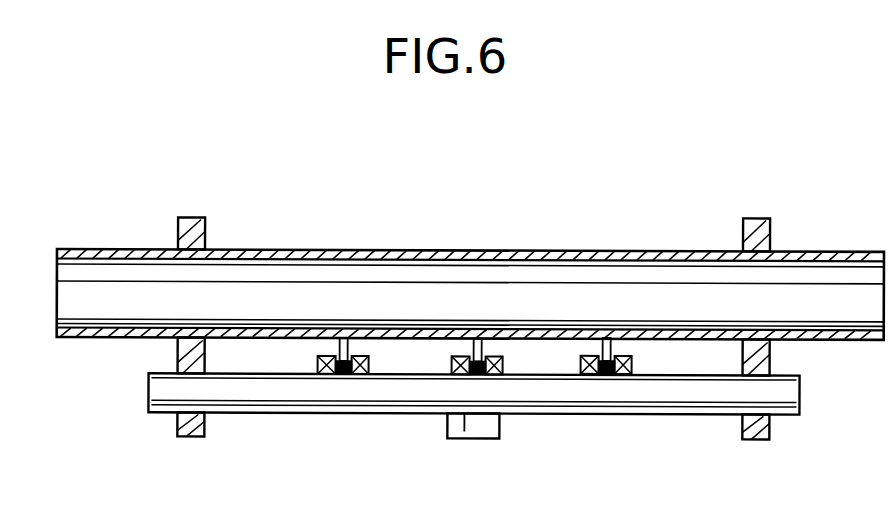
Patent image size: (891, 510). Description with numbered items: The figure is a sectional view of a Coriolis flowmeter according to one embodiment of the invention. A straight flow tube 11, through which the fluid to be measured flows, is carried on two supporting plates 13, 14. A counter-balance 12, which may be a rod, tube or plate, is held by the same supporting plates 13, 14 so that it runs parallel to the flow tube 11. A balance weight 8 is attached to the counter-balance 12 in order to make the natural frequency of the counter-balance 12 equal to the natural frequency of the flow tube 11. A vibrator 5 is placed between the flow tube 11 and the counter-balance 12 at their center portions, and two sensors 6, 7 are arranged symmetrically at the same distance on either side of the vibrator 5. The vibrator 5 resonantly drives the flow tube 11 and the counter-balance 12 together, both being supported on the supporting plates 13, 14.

The vibrator 5 is at (438, 361).
The sensor 6 is at (303, 361).
The sensor 7 is at (572, 360).
The balance weight 8 is at (477, 436).
The flow tube 11 is at (838, 269).
The counter-balance 12 is at (647, 404).
The supporting plate 13 is at (197, 217).
The supporting plate 14 is at (758, 218).